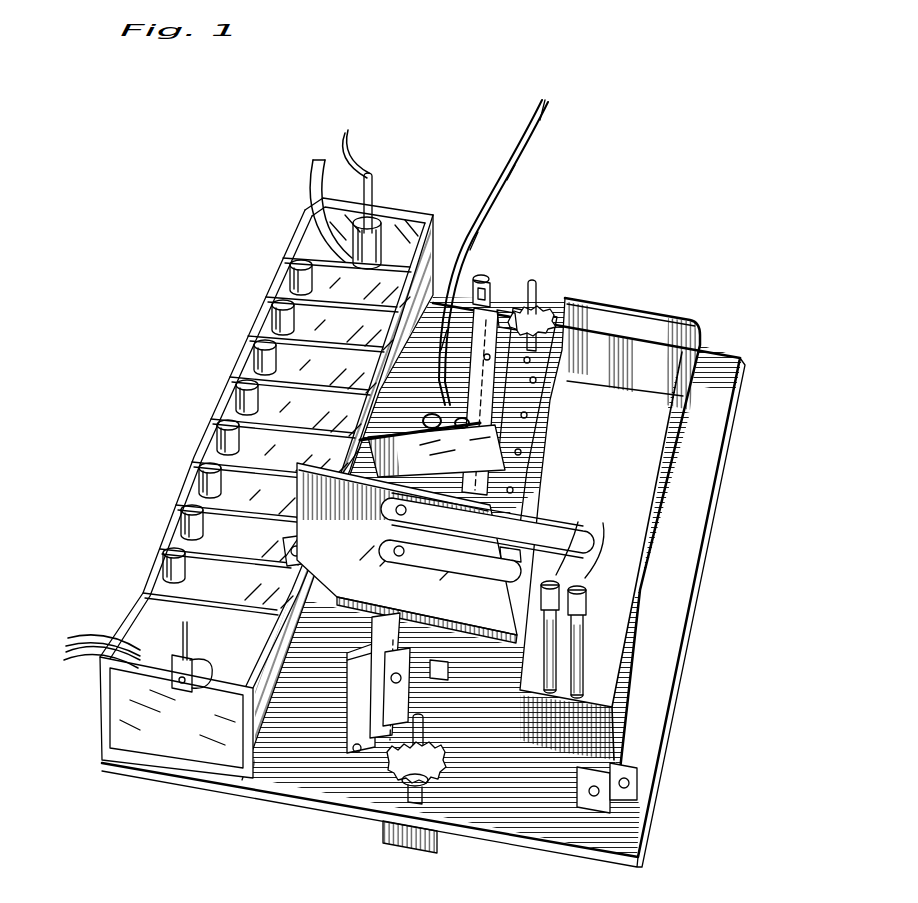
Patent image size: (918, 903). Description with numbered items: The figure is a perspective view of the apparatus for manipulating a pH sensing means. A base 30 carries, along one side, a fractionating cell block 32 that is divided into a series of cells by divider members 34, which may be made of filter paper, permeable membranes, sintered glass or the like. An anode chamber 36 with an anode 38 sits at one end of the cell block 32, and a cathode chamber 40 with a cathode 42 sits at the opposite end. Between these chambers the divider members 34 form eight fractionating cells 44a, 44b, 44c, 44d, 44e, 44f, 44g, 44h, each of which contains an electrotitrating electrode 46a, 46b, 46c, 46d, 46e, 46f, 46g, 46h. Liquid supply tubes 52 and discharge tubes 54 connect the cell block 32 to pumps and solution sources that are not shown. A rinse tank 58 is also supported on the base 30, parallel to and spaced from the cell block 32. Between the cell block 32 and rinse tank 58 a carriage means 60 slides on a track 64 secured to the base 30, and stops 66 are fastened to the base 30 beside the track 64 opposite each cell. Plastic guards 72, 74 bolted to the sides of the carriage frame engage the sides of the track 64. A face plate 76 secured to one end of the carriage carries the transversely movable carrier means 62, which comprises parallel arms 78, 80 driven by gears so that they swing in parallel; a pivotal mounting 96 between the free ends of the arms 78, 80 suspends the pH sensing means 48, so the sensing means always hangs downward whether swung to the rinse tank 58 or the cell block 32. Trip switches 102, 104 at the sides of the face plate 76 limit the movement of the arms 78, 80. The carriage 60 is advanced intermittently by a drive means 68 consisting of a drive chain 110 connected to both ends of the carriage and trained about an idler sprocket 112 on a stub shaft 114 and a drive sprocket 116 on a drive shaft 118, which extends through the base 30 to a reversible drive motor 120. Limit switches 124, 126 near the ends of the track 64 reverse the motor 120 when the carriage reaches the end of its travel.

The base 30 is at (745, 372).
The fractionating cell block 32 is at (436, 212).
The divider members 34 is at (253, 604).
The anode chamber 36 is at (410, 249).
The anode 38 is at (373, 178).
The cathode chamber 40 is at (246, 664).
The cathode 42 is at (185, 636).
The fractionating cell 44a is at (226, 578).
The fractionating cell 44b is at (242, 535).
The fractionating cell 44c is at (267, 492).
The fractionating cell 44d is at (283, 449).
The fractionating cell 44e is at (300, 406).
The fractionating cell 44f is at (316, 364).
The fractionating cell 44g is at (332, 323).
The fractionating cell 44h is at (347, 282).
The electrotitrating electrode 46a is at (171, 550).
The electrotitrating electrode 46b is at (189, 507).
The electrotitrating electrode 46c is at (207, 464).
The electrotitrating electrode 46d is at (225, 420).
The electrotitrating electrode 46e is at (244, 380).
The electrotitrating electrode 46f is at (262, 340).
The electrotitrating electrode 46g is at (280, 300).
The electrotitrating electrode 46h is at (297, 260).
The pH sensing means 48 is at (588, 640).
The liquid supply tubes 52 is at (346, 163).
The discharge tubes 54 is at (316, 160).
The rinse tank 58 is at (606, 469).
The carriage means 60 is at (509, 416).
The movable carrier means 62 is at (546, 525).
The track 64 is at (510, 310).
The stops 66 is at (440, 682).
The drive means 68 is at (522, 788).
The plastic guard 72 is at (385, 675).
The plastic guard 74 is at (406, 685).
The face plate 76 is at (360, 522).
The upper parallel arm 78 is at (459, 531).
The lower parallel arm 80 is at (459, 573).
The pivotal mounting 96 is at (606, 522).
The trip switch 102 is at (427, 616).
The trip switch 104 is at (283, 543).
The drive chain 110 is at (400, 702).
The idler sprocket 112 is at (550, 312).
The stub shaft 114 is at (537, 290).
The drive sprocket 116 is at (453, 776).
The drive shaft 118 is at (425, 730).
The drive motor 120 is at (383, 832).
The limit switch 124 is at (484, 272).
The limit switch 126 is at (347, 678).